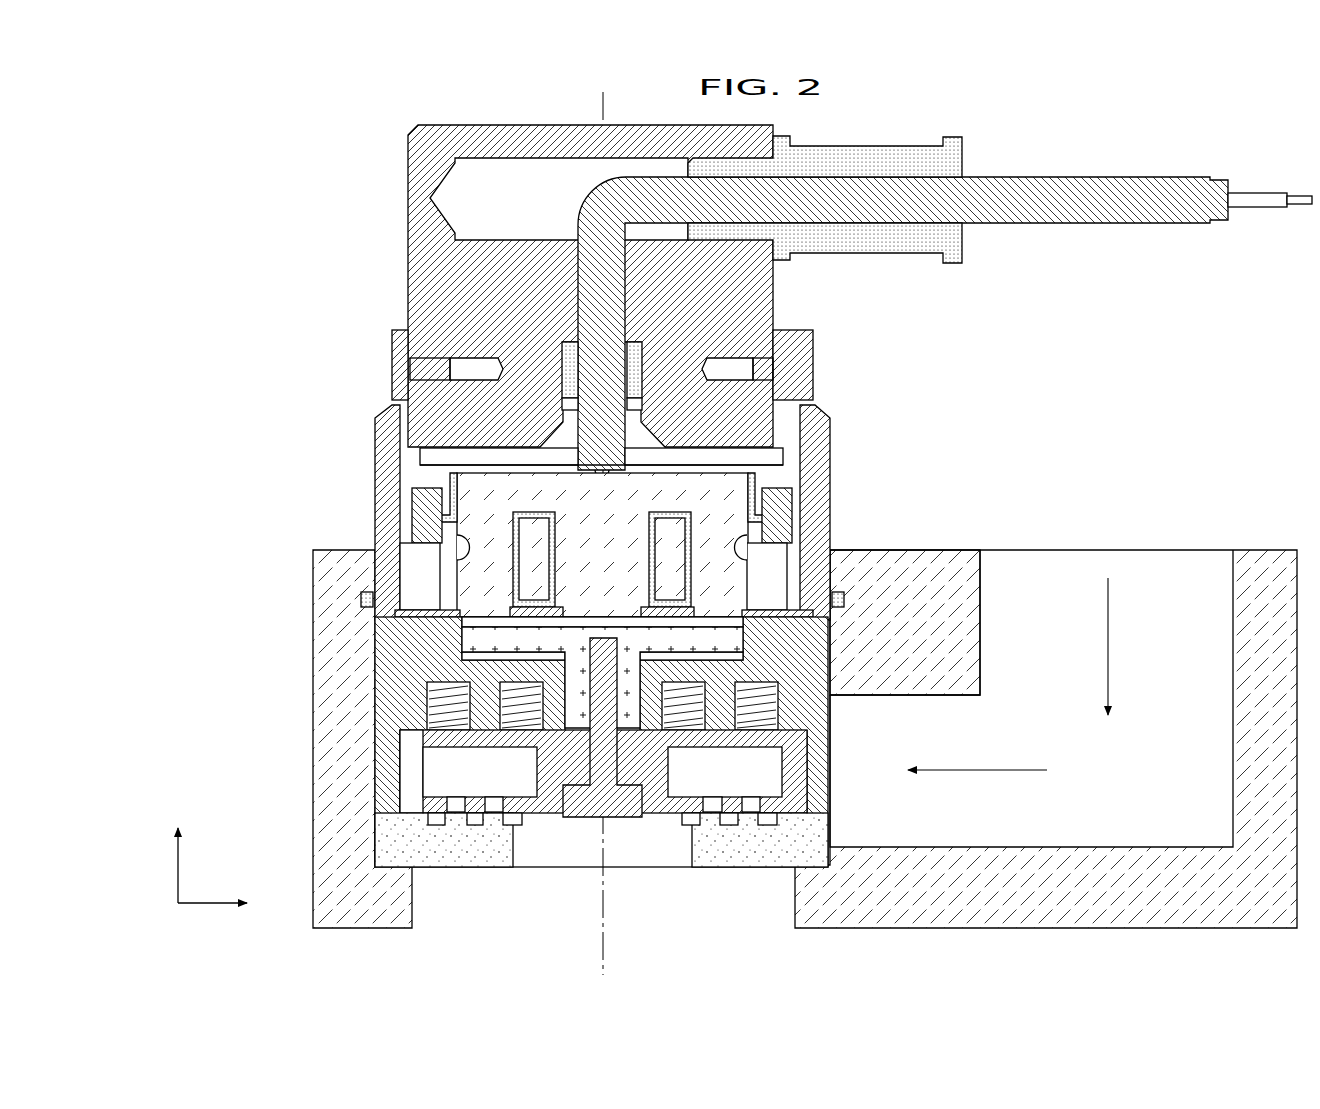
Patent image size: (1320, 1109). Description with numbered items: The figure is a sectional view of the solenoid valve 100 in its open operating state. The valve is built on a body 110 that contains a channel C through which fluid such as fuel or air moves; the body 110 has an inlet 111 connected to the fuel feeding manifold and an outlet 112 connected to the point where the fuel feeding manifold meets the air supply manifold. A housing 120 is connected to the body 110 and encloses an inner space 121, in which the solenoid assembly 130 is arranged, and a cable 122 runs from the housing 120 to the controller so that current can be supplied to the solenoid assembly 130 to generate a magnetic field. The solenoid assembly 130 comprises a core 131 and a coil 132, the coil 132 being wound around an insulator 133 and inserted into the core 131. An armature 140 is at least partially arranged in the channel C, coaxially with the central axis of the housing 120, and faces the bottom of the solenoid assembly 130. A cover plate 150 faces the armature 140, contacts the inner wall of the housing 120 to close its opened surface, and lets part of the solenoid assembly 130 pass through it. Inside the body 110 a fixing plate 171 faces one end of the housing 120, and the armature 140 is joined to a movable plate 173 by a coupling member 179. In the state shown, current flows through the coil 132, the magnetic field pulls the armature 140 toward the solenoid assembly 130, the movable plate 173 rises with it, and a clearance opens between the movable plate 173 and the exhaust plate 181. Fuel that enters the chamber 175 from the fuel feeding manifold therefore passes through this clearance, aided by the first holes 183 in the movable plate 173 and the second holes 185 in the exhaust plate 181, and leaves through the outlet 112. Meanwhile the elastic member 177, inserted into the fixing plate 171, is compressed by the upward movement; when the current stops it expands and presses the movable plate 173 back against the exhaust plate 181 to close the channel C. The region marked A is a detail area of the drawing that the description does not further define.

The solenoid valve 100 is at (260, 126).
The body 110 is at (692, 729).
The inlet 111 is at (1233, 605).
The outlet 112 is at (790, 910).
The housing 120 is at (791, 295).
The inner space 121 is at (437, 575).
The cable 122 is at (1163, 190).
The solenoid assembly 130 is at (653, 525).
The core 131 is at (735, 497).
The coil 132 is at (673, 545).
The insulator 133 is at (690, 603).
The armature 140 is at (748, 630).
The cover plate 150 is at (742, 648).
The fixing plate 171 is at (597, 682).
The movable plate 173 is at (519, 771).
The chamber 175 is at (413, 770).
The elastic member 177 is at (430, 707).
The coupling member 179 is at (420, 668).
The exhaust plate 181 is at (403, 853).
The first holes 183 is at (457, 800).
The second holes 185 is at (515, 823).
The region A is at (507, 598).
The channel C is at (1172, 818).